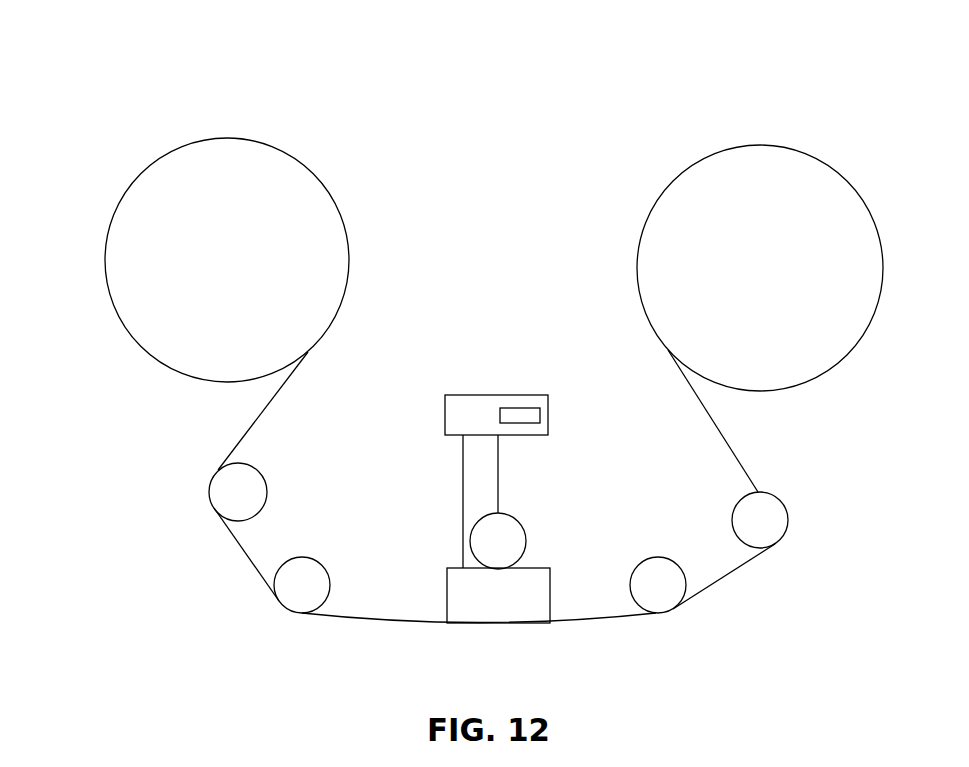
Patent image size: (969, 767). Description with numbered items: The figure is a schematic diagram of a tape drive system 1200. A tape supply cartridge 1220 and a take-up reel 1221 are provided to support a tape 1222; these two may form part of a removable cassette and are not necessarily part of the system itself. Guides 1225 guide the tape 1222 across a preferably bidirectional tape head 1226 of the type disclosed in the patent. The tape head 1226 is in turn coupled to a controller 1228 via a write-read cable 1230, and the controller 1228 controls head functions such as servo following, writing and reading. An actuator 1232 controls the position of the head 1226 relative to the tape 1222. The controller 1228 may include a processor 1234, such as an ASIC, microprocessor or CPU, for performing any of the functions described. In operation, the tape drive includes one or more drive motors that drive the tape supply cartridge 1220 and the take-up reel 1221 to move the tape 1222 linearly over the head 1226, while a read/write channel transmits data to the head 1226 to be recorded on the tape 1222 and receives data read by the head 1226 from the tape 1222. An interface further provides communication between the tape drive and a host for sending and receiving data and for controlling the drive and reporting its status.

The tape drive system 1200 is at (110, 138).
The tape supply cartridge 1220 is at (228, 137).
The take-up reel 1221 is at (760, 146).
The tape 1222 is at (375, 622).
The guides 1225 is at (267, 490).
The tape head 1226 is at (553, 595).
The controller 1228 is at (495, 395).
The write-read cable 1230 is at (463, 540).
The actuator 1232 is at (520, 518).
The processor 1234 is at (530, 408).